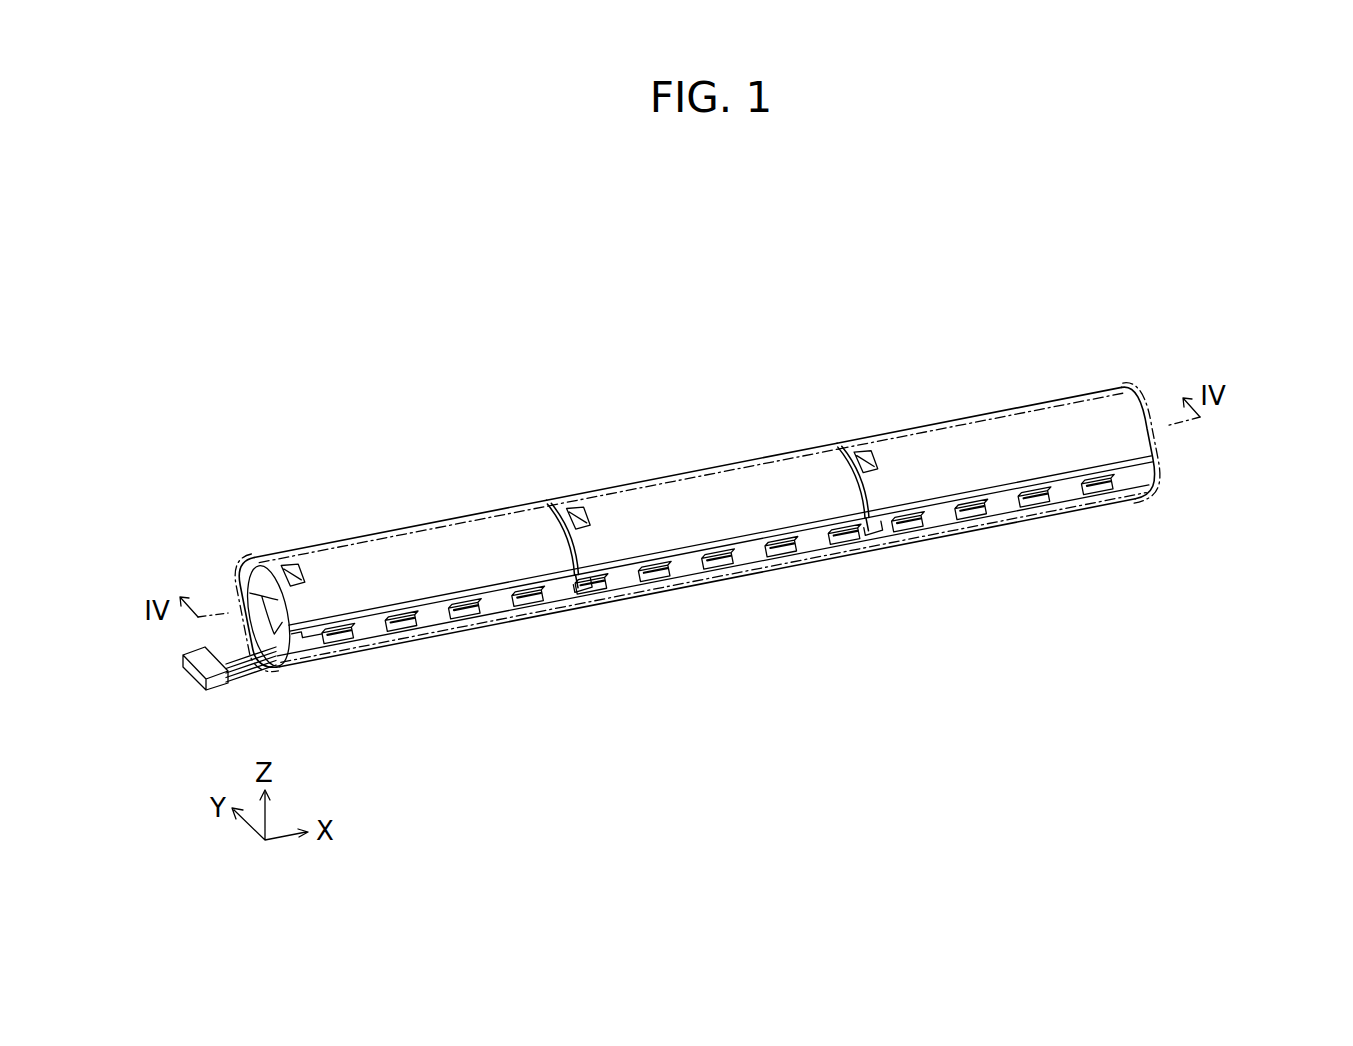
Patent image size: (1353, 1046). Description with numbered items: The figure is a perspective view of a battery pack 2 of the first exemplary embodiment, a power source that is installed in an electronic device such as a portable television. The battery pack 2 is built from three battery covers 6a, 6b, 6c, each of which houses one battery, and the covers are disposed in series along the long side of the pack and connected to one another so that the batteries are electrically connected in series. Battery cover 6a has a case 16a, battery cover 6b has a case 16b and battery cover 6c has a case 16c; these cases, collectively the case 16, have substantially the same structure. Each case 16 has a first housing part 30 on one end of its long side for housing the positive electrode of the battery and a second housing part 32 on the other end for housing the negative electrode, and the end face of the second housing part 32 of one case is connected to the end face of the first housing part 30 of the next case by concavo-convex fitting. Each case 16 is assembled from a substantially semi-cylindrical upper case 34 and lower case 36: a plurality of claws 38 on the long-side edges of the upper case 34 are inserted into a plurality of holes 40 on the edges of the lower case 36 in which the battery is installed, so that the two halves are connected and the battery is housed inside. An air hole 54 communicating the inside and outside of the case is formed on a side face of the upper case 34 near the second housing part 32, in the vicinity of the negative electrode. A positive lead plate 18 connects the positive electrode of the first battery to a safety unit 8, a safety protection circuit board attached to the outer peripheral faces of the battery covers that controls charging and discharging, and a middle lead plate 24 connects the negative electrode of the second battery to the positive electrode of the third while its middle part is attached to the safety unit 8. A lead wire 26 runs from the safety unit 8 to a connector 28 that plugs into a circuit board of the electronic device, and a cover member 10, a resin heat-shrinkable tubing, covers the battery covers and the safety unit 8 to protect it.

The battery pack 2 is at (812, 295).
The battery cover 6a is at (1045, 412).
The battery cover 6b is at (707, 495).
The battery cover 6c is at (422, 553).
The safety unit 8 is at (717, 574).
The cover member 10 is at (247, 564).
The case 16 is at (1233, 440).
The case 16a is at (988, 425).
The case 16b is at (642, 500).
The case 16c is at (358, 560).
The positive lead plate 18 is at (887, 538).
The middle lead plate 24 is at (585, 590).
The lead wire 26 is at (257, 674).
The connector 28 is at (192, 672).
The first housing part 30 is at (533, 527).
The second housing part 32 is at (272, 563).
The upper case 34 is at (1147, 446).
The lower case 36 is at (1150, 486).
The claw 38 is at (975, 503).
The hole 40 is at (920, 527).
The air hole 54 is at (290, 566).